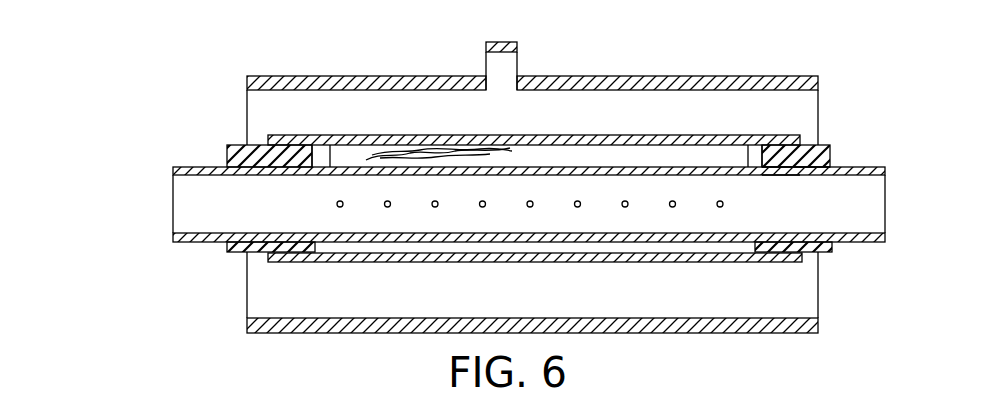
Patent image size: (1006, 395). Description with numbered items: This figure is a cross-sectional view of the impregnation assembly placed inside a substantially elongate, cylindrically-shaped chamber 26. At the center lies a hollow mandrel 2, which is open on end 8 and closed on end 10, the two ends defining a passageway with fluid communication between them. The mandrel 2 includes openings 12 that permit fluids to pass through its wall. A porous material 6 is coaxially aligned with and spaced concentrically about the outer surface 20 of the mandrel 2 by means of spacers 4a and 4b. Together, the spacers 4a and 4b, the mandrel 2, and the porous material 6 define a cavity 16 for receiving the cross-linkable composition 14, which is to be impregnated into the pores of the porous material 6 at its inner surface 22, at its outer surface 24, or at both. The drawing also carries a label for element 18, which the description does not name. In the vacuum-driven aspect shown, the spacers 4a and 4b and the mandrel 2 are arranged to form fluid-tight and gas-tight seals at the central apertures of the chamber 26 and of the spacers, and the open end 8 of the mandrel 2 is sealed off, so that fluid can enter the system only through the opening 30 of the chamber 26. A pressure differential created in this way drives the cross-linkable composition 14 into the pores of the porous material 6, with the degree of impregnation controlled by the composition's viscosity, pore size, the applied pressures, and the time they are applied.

The mandrel 2 is at (205, 166).
The spacer 4a is at (243, 143).
The spacer 4b is at (826, 144).
The porous material 6 is at (758, 144).
The open end 8 is at (173, 203).
The closed end 10 is at (887, 203).
The openings 12 is at (337, 204).
The cross-linkable composition 14 is at (395, 150).
The cavity 16 is at (615, 150).
The tube wall 18 is at (774, 176).
The outer surface of mandrel 20 is at (723, 148).
The inner surface of porous material 22 is at (577, 150).
The outer surface of porous material 24 is at (572, 143).
The chamber 26 is at (654, 75).
The opening 30 is at (500, 41).